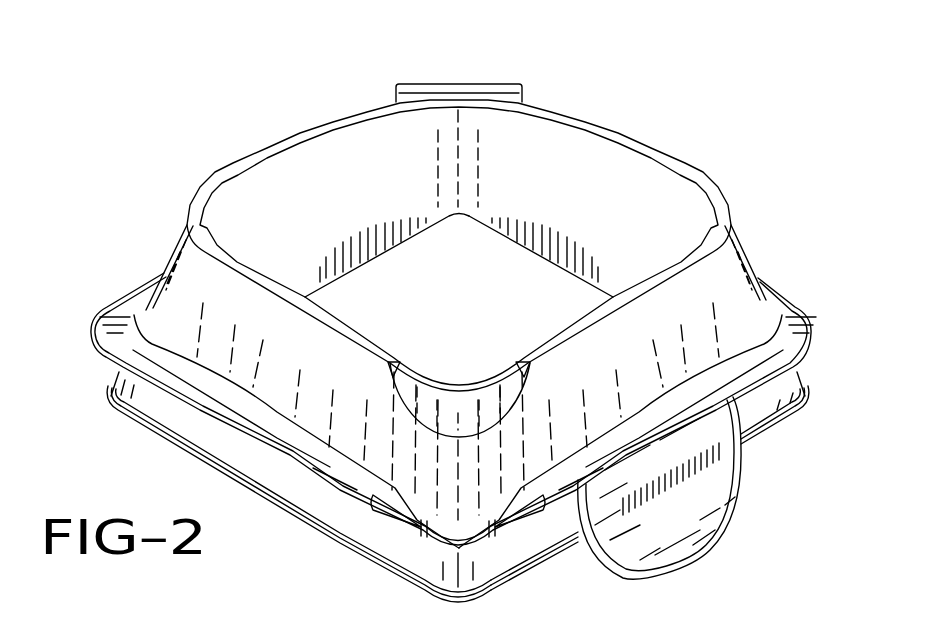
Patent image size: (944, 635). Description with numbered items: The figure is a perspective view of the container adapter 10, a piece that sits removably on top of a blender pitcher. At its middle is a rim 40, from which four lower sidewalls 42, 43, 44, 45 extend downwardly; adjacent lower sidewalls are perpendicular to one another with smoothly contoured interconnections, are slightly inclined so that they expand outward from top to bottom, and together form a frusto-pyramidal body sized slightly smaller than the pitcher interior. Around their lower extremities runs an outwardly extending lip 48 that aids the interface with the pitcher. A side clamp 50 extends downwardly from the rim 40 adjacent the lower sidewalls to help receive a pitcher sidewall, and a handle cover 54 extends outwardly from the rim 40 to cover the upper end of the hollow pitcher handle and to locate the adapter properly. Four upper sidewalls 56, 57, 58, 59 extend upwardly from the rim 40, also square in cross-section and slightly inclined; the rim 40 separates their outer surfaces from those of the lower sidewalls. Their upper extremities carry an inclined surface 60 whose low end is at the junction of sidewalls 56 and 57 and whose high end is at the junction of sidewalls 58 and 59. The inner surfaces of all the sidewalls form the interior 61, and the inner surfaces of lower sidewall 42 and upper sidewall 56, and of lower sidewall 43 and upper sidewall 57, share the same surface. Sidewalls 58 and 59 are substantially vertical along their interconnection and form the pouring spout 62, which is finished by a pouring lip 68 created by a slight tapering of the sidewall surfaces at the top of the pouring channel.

The container adapter 10 is at (97, 150).
The rim 40 is at (795, 325).
The lower sidewall 42 is at (558, 238).
The lower sidewall 43 is at (355, 238).
The lower sidewall 44 is at (533, 534).
The lower sidewall 45 is at (332, 503).
The outwardly extending lip 48 is at (790, 420).
The side clamp 50 is at (680, 510).
The handle cover 54 is at (498, 95).
The upper sidewall 56 is at (632, 175).
The upper sidewall 57 is at (286, 185).
The upper sidewall 58 is at (697, 352).
The upper sidewall 59 is at (230, 348).
The inclined surface 60 is at (564, 114).
The interior 61 is at (338, 152).
The pouring spout 62 is at (445, 372).
The pouring lip 68 is at (469, 410).